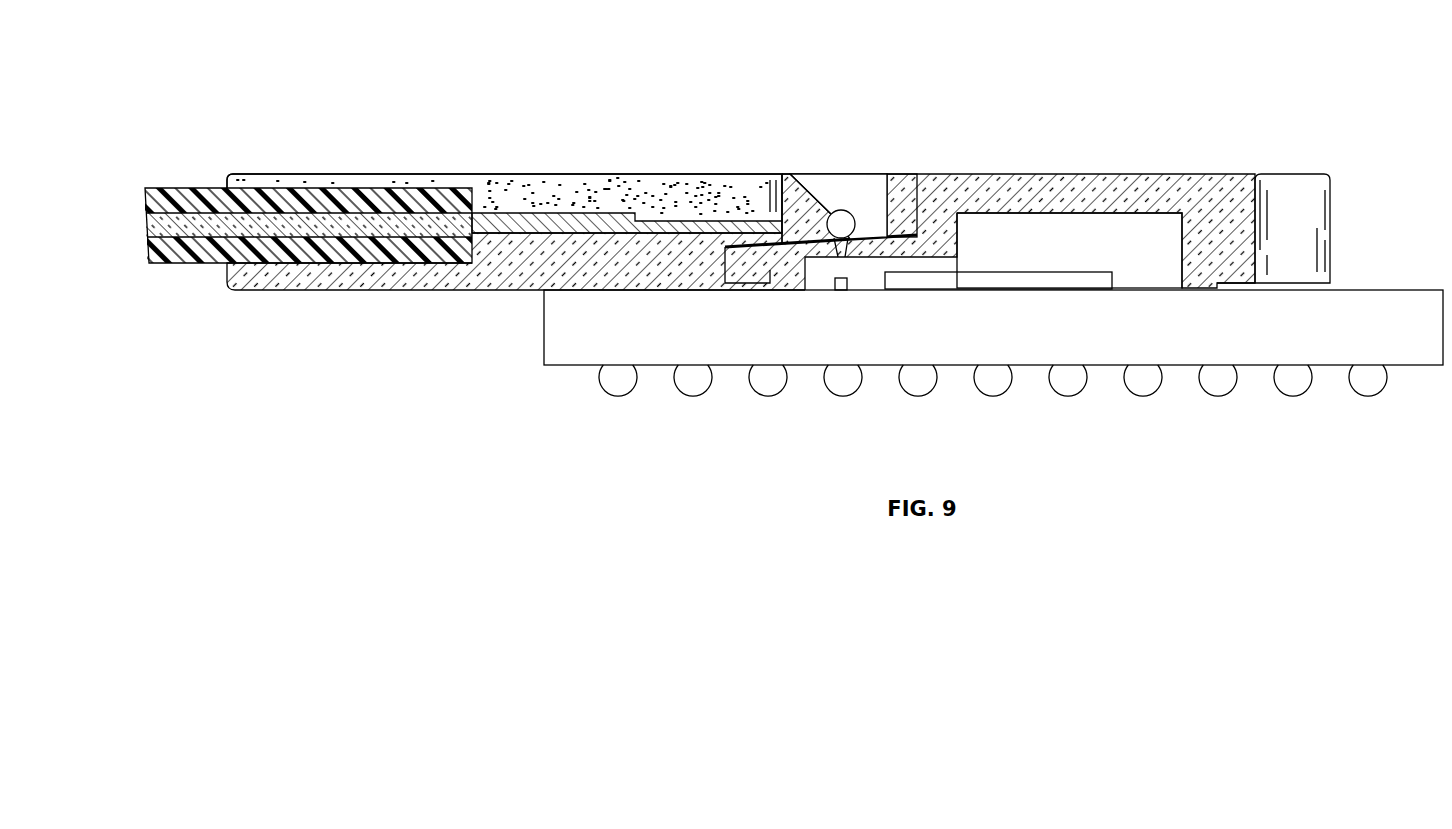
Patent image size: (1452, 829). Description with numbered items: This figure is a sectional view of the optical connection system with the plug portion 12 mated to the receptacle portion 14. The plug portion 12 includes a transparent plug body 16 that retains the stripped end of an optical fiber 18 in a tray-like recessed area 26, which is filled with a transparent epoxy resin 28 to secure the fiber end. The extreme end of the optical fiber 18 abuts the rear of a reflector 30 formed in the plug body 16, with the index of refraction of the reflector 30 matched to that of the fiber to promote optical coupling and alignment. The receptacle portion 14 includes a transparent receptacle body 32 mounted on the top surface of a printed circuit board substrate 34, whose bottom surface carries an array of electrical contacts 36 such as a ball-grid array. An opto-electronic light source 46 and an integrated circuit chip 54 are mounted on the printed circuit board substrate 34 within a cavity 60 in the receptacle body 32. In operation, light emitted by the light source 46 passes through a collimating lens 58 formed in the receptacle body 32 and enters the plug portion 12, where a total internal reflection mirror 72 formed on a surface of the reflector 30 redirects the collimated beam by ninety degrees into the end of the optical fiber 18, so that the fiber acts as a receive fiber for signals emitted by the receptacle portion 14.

The plug portion 12 is at (214, 85).
The receptacle portion 14 is at (1046, 50).
The plug body 16 is at (362, 291).
The optical fiber 18 is at (177, 265).
The tray-like recessed area 26 is at (684, 205).
The epoxy resin 28 is at (505, 190).
The reflector 30 is at (800, 186).
The receptacle body 32 is at (1082, 174).
The printed circuit board substrate 34 is at (1375, 288).
The electrical contacts 36 is at (615, 396).
The opto-electronic light source 46 is at (840, 286).
The integrated circuit chip 54 is at (1090, 290).
The collimating lens 58 is at (850, 260).
The cavity 60 is at (1092, 256).
The total internal reflection mirror 72 is at (856, 212).